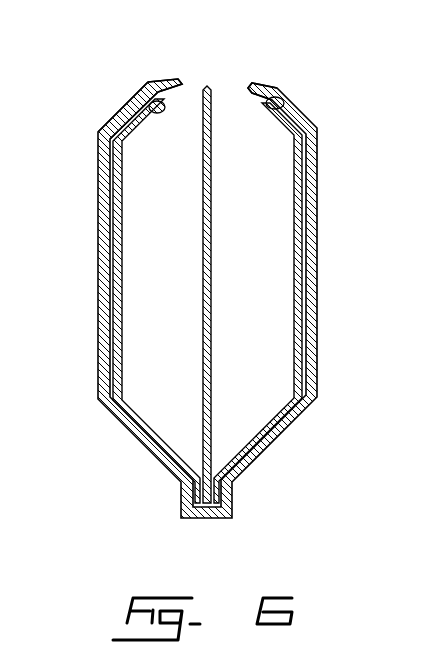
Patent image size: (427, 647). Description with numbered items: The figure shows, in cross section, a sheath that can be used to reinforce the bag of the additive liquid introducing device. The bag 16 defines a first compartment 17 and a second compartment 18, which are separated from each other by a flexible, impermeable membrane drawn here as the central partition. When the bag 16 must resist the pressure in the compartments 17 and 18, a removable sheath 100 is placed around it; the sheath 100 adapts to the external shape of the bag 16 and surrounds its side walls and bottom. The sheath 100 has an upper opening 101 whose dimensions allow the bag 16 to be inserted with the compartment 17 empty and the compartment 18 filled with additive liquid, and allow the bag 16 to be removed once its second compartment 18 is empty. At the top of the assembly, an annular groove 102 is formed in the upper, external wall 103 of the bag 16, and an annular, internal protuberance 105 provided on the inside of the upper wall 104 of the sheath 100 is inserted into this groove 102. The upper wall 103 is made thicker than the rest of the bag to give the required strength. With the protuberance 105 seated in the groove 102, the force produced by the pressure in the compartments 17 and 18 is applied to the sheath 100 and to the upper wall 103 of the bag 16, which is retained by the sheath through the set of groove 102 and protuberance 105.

The bag 16 is at (108, 167).
The first compartment 17 is at (153, 351).
The second compartment 18 is at (277, 379).
The removable sheath 100 is at (318, 278).
The upper opening 101 is at (158, 76).
The annular groove 102 is at (284, 94).
The upper, external wall 103 is at (252, 82).
The upper wall 104 is at (114, 113).
The annular, internal protuberance 105 is at (158, 114).